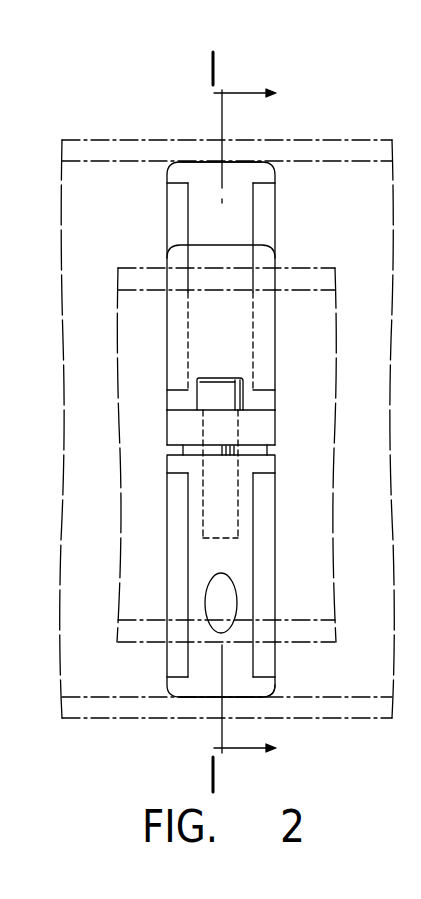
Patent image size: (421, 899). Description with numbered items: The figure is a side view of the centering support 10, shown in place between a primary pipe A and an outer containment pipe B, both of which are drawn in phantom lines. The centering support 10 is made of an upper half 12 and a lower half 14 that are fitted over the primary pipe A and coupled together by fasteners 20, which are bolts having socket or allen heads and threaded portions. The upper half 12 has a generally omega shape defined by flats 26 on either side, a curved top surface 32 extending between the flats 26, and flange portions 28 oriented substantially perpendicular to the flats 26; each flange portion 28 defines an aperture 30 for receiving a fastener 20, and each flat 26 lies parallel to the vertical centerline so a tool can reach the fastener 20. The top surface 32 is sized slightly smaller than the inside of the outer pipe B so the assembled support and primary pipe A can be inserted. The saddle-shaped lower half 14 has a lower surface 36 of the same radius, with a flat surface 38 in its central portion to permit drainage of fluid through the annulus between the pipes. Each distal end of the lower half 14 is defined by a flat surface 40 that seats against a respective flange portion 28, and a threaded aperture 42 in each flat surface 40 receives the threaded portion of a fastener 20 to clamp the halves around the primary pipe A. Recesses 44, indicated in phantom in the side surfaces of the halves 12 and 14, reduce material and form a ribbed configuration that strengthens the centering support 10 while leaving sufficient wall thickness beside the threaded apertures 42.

The centering support 10 is at (310, 170).
The upper half 12 is at (177, 212).
The lower half 14 is at (175, 518).
The fastener 20 is at (224, 378).
The flat 26 is at (207, 327).
The flange portion 28 is at (167, 430).
The aperture 30 is at (247, 441).
The top surface 32 is at (240, 221).
The lower surface 36 is at (242, 668).
The flat surface 38 is at (200, 700).
The flat surface 40 is at (183, 447).
The threaded aperture 42 is at (228, 599).
The recess 44 is at (183, 258).
The primary pipe A is at (290, 262).
The outer pipe B is at (160, 138).